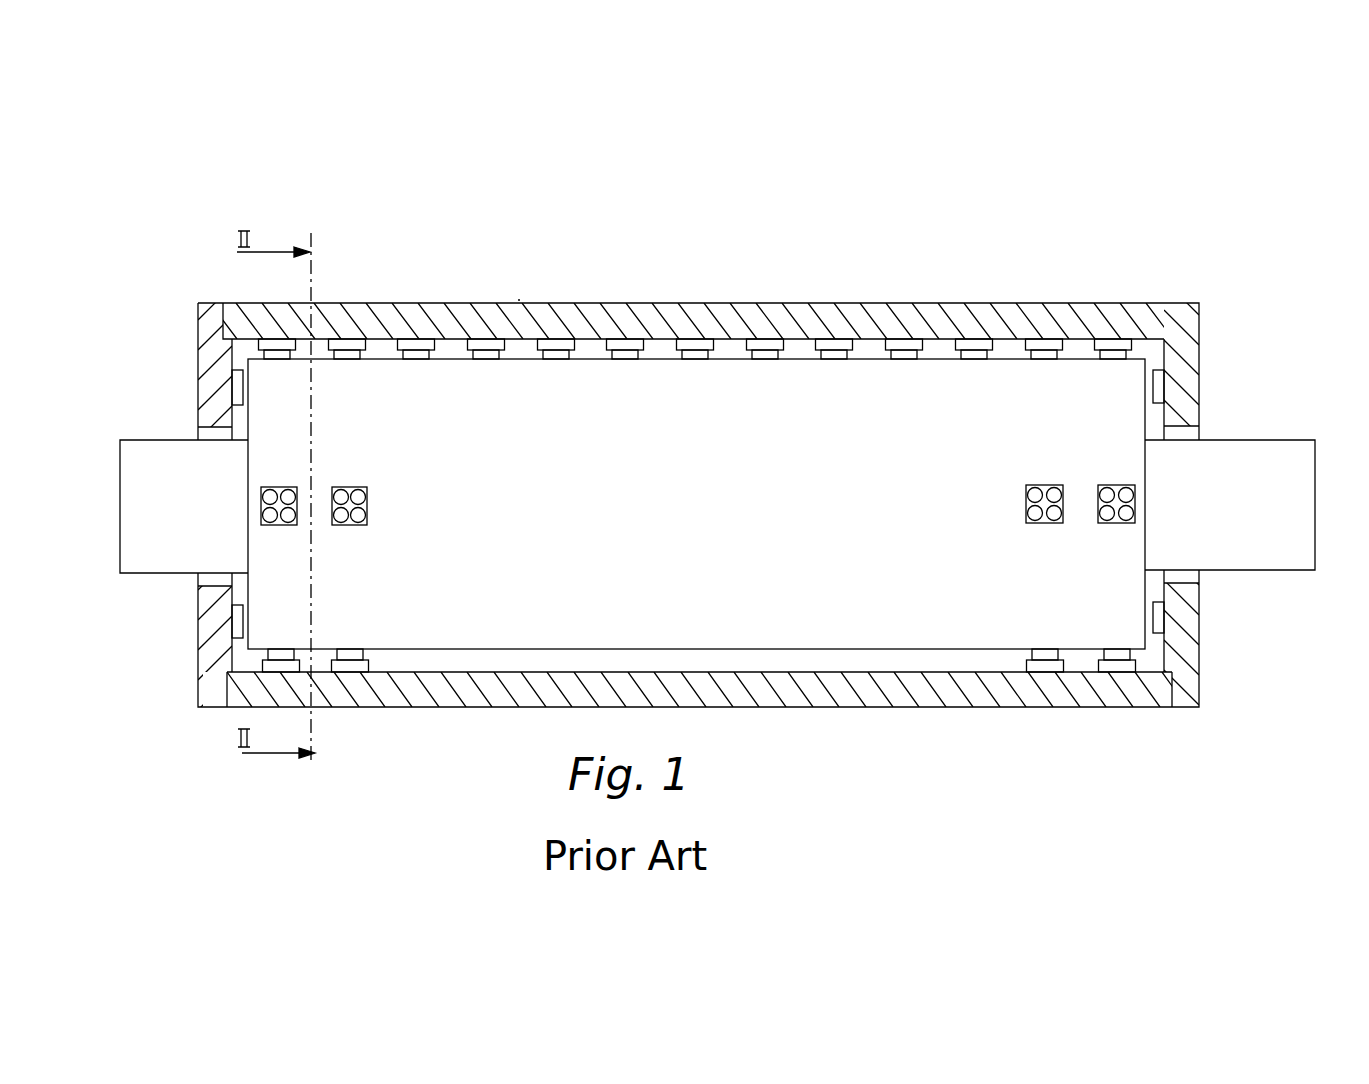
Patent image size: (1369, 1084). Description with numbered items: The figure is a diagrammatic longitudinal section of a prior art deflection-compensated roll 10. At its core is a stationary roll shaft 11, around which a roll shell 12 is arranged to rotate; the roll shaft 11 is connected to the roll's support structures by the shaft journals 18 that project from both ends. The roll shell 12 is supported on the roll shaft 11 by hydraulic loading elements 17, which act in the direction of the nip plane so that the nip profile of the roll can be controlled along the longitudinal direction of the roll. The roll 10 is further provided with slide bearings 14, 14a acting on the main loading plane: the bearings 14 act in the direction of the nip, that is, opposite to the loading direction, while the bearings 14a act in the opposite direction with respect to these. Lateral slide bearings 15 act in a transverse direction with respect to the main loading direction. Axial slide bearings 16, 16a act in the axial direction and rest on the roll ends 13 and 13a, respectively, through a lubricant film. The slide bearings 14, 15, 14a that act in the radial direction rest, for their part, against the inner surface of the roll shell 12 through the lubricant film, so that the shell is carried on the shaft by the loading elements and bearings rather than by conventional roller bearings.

The deflection-compensated roll 10 is at (878, 235).
The roll shaft 11 is at (778, 420).
The roll shell 12 is at (691, 313).
The roll end 13 is at (203, 350).
The roll end 13a is at (1183, 341).
The slide bearing 14 is at (280, 347).
The slide bearing 14a is at (345, 665).
The lateral slide bearing 15 is at (348, 487).
The axial slide bearing 16 is at (232, 388).
The axial slide bearing 16a is at (1160, 388).
The hydraulic loading element 17 is at (628, 340).
The shaft journal 18 is at (137, 453).